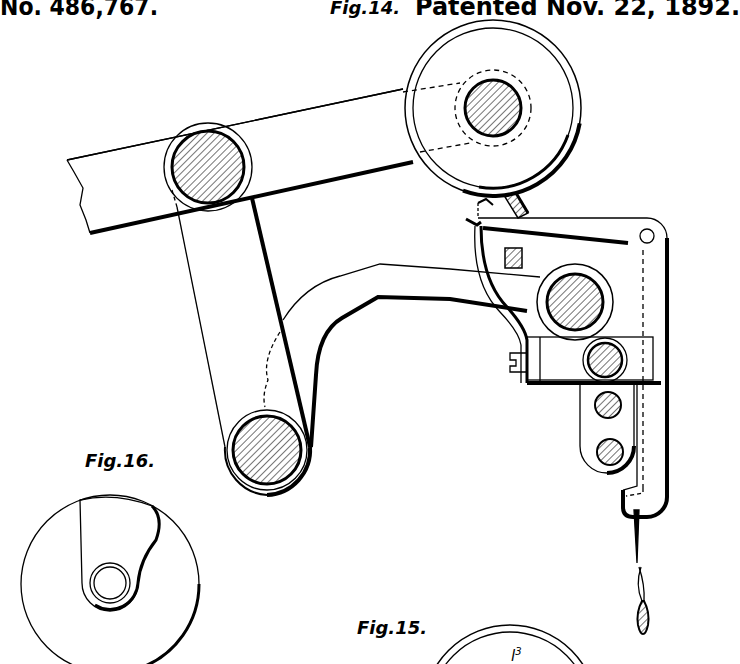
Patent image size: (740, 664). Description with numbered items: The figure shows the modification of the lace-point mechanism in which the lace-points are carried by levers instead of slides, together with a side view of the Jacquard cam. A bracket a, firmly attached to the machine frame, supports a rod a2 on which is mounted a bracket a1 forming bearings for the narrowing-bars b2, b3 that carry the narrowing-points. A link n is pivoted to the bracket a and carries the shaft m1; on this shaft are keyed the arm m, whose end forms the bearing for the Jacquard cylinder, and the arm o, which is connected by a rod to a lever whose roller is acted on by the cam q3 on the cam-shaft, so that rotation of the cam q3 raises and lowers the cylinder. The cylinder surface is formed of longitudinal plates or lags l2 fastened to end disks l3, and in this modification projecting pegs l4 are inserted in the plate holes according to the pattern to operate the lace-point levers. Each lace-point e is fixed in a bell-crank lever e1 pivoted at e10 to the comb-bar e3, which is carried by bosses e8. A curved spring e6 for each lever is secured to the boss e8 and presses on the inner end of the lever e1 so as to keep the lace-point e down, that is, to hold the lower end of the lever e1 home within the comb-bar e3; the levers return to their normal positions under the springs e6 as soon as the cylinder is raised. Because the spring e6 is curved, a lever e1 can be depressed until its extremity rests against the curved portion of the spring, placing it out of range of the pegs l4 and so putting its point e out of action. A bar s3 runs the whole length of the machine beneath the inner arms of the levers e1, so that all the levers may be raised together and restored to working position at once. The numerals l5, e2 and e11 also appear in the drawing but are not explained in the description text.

In FIG. 14, the arm o is at (240, 161).
In FIG. 14, the arm m is at (235, 124).
In FIG. 14, the shaft m1 is at (208, 167).
In FIG. 14, the link n is at (241, 342).
In FIG. 14, the bracket a is at (411, 355).
In FIG. 14, the end disk l3 is at (492, 108).
In FIG. 14, the plate or lag l2 is at (493, 108).
In FIG. 14, the projecting peg l4 is at (524, 203).
In FIG. 14, the catch l5 is at (480, 203).
In FIG. 14, the frame top bar e2 is at (566, 300).
In FIG. 14, the comb-bar e3 is at (653, 367).
In FIG. 14, the bell-crank lever e1 is at (657, 482).
In FIG. 14, the pivot e10 is at (654, 237).
In FIG. 14, the spring e6 is at (484, 304).
In FIG. 14, the bar s3 is at (525, 256).
In FIG. 14, the rod a2 is at (575, 302).
In FIG. 14, the boss e8 is at (585, 360).
In FIG. 14, the bracket a1 is at (607, 428).
In FIG. 14, the narrowing-bar b2 is at (595, 406).
In FIG. 14, the narrowing-bar b3 is at (597, 453).
In FIG. 14, the lace-point e is at (642, 536).
In FIG. 14, the shuttle e11 is at (654, 600).
In FIG. 16, the cam q3 is at (119, 554).